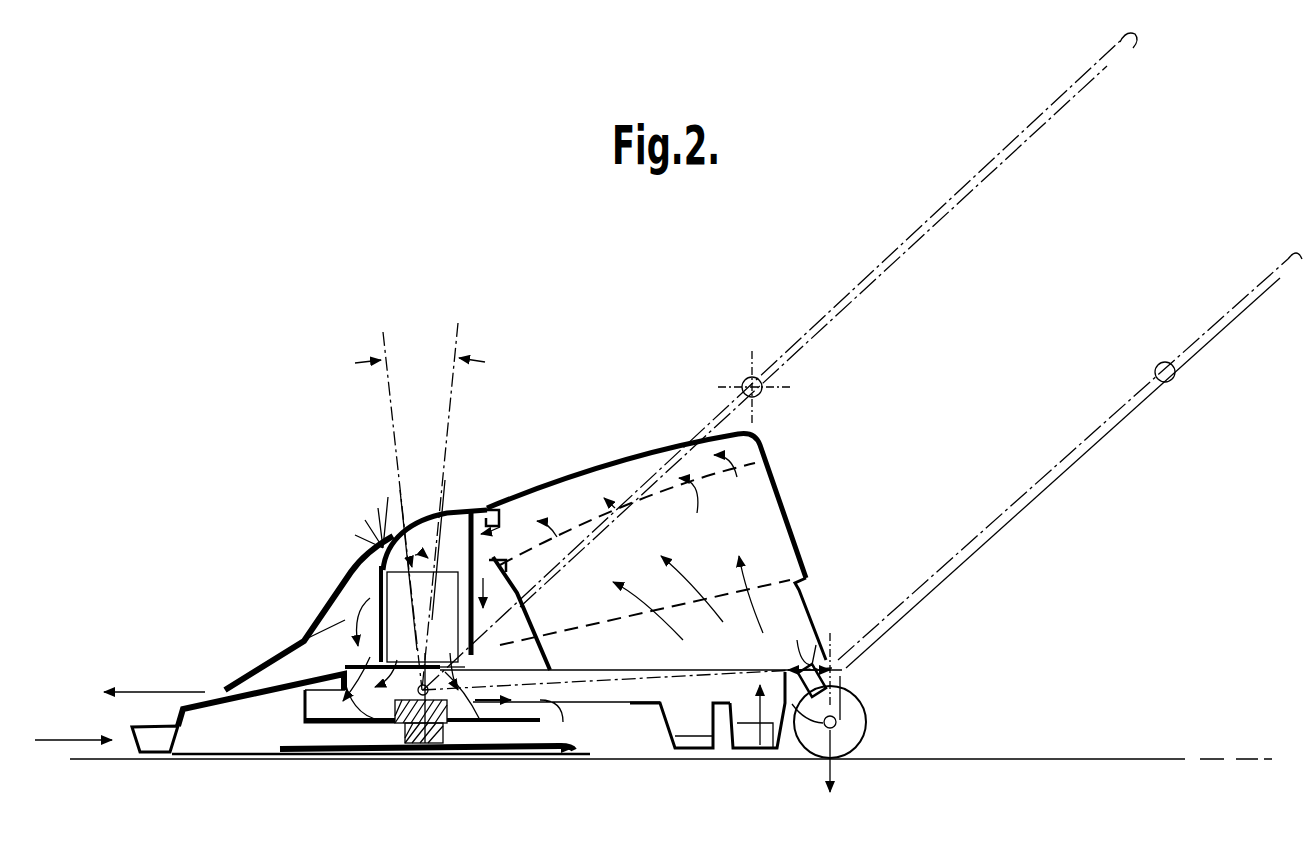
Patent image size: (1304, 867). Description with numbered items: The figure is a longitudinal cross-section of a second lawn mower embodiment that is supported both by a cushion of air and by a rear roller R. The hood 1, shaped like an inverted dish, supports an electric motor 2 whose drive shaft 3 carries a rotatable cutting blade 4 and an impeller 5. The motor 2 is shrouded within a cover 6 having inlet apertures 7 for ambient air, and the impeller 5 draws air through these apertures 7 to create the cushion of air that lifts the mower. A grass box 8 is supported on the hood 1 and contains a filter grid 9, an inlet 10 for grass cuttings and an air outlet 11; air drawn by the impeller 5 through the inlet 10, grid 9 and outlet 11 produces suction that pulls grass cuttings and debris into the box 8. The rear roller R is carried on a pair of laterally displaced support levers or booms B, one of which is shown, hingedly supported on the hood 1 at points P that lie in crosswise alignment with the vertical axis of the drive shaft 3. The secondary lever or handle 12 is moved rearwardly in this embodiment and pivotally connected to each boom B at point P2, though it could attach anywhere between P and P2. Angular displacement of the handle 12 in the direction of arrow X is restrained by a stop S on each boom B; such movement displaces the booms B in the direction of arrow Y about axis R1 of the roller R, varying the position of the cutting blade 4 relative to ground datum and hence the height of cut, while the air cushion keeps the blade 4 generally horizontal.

The hood 1 is at (202, 703).
The electric motor 2 is at (400, 603).
The drive shaft 3 is at (407, 730).
The cutting blade 4 is at (515, 752).
The impeller 5 is at (578, 752).
The cover 6 is at (455, 507).
The inlet apertures 7 is at (383, 548).
The grass box 8 is at (770, 476).
The filter grid 9 is at (706, 492).
The inlet for grass cuttings 10 is at (764, 752).
The air outlet 11 is at (503, 530).
The handle 12 is at (866, 283).
The hinge points P is at (393, 723).
The support levers or booms B is at (668, 680).
The stop S is at (806, 633).
The pivot point P2 is at (838, 670).
The rear roller R is at (848, 738).
The roller axis R1 is at (826, 728).
The arrow X (handle movement direction) X is at (1057, 418).
The arrow Y (boom displacement direction) Y is at (718, 690).